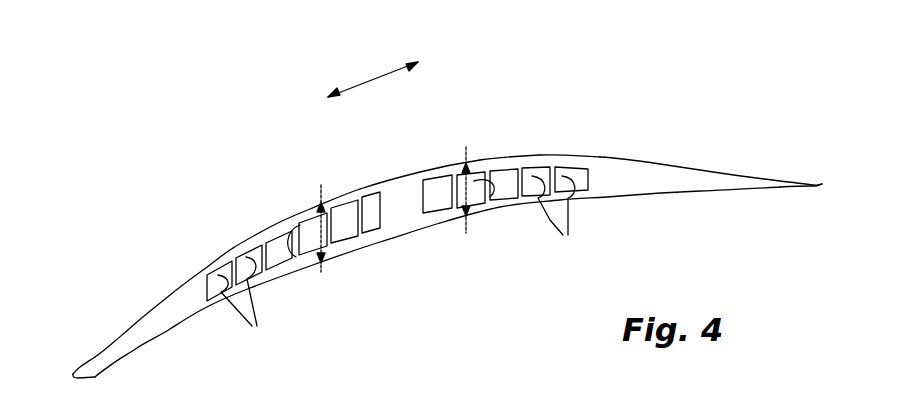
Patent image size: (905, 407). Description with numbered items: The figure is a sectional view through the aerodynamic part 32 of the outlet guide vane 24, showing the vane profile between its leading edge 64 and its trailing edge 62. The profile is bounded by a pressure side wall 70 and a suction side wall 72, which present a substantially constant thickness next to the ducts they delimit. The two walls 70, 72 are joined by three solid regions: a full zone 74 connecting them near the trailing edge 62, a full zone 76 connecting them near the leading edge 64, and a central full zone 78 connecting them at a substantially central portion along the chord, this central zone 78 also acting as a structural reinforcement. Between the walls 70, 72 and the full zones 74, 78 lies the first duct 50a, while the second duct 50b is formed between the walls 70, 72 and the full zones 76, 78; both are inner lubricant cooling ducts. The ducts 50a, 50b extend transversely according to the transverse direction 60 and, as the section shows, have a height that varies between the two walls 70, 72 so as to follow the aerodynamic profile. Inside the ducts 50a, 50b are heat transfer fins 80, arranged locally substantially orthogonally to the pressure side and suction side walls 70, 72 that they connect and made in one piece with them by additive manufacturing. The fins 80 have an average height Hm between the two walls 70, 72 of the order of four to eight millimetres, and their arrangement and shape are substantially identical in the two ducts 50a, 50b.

The outlet guide vane 24 is at (233, 230).
The aerodynamic part 32 is at (538, 154).
The first duct 50a is at (510, 185).
The second duct 50b is at (309, 250).
The transverse direction 60 is at (346, 88).
The trailing edge 62 is at (822, 181).
The leading edge 64 is at (73, 372).
The pressure side wall 70 is at (368, 244).
The suction side wall 72 is at (307, 213).
The full zone 74 is at (661, 184).
The full zone 76 is at (165, 322).
The central full zone 78 is at (395, 173).
The fins 80 is at (399, 262).
The average height Hm is at (294, 258).